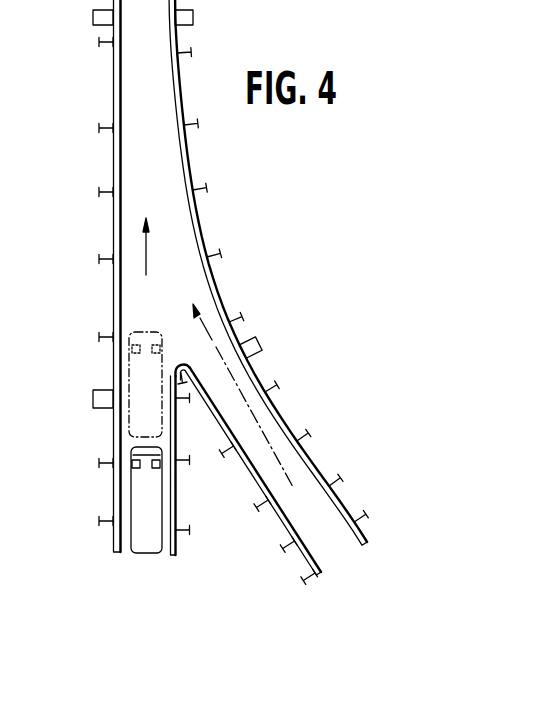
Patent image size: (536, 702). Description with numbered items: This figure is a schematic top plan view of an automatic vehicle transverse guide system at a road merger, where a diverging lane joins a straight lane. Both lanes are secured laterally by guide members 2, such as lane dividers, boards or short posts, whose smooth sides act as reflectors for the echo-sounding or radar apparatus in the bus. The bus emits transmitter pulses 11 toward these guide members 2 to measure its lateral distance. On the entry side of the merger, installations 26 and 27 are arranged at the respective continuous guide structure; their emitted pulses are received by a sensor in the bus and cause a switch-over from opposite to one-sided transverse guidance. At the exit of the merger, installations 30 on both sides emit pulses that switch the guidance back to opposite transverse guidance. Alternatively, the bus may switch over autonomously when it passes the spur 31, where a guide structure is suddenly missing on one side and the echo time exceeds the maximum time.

The guide members 2 is at (113, 165).
The transmitter pulses 11 is at (128, 350).
The installation 26 is at (100, 404).
The installation 27 is at (267, 342).
The installations 30 is at (103, 21).
The spur 31 is at (183, 360).